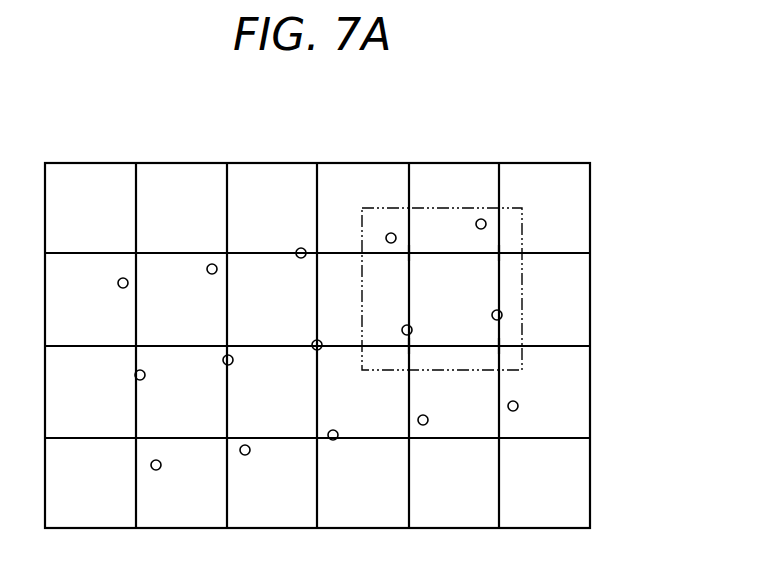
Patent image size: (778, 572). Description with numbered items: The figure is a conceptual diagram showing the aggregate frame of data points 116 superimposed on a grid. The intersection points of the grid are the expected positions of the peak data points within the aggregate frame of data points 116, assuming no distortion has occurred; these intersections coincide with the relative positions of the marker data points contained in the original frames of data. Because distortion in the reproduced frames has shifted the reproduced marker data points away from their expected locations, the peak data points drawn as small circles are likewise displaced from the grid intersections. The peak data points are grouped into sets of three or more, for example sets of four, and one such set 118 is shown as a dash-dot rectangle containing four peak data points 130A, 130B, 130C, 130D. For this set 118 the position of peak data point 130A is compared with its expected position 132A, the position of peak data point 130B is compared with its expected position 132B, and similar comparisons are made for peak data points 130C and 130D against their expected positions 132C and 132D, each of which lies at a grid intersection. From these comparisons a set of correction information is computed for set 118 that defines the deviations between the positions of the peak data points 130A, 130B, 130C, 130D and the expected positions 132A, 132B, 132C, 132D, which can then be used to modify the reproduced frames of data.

The aggregate frame of data points 116 is at (65, 163).
The set 118 is at (455, 207).
The peak data point 130A is at (482, 219).
The peak data point 130B is at (502, 315).
The peak data point 130C is at (402, 330).
The peak data point 130D is at (386, 238).
The expected position 132A is at (499, 252).
The expected position 132B is at (500, 346).
The expected position 132C is at (409, 346).
The expected position 132D is at (410, 252).